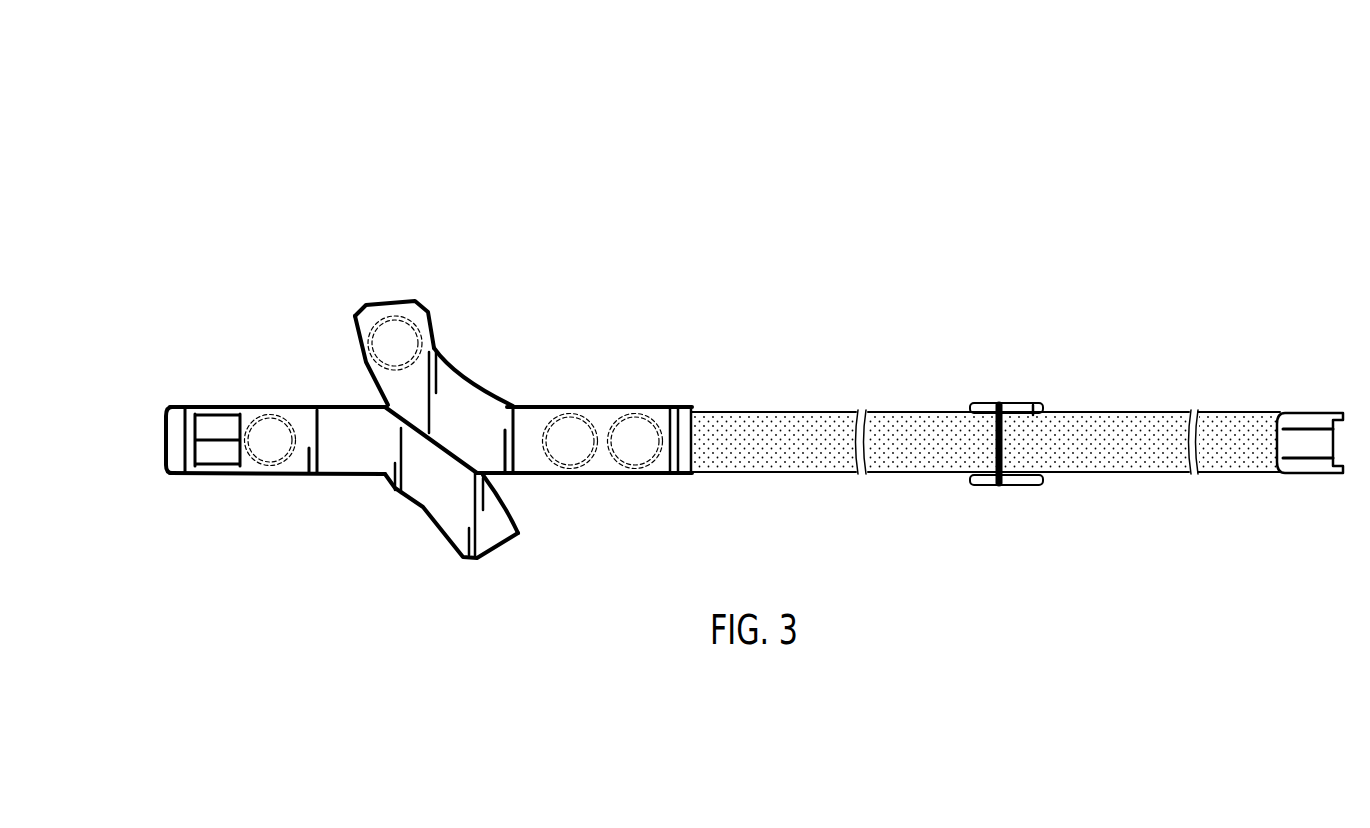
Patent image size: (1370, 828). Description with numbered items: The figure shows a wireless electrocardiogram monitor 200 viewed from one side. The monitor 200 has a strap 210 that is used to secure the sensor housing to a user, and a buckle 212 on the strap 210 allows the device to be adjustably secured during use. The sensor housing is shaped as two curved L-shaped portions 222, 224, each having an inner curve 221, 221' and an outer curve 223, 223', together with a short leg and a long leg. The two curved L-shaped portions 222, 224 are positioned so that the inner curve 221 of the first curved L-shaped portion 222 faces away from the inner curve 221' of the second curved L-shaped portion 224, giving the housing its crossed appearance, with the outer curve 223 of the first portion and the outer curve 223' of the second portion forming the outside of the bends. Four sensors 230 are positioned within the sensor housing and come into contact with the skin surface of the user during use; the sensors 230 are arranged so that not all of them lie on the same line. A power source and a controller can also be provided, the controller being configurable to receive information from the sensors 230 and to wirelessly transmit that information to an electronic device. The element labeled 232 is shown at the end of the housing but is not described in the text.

The wireless electrocardiogram monitor 200 is at (1286, 110).
The strap 210 is at (1140, 430).
The buckle 212 is at (975, 408).
The inner curve 221 is at (481, 405).
The inner curve 221' is at (348, 354).
The first curved L-shaped portion 222 is at (518, 290).
The outer curve 223 is at (401, 510).
The outer curve 223' is at (537, 515).
The second curved L-shaped portion 224 is at (363, 614).
The sensors 230 is at (670, 405).
The end housing 232 is at (252, 407).